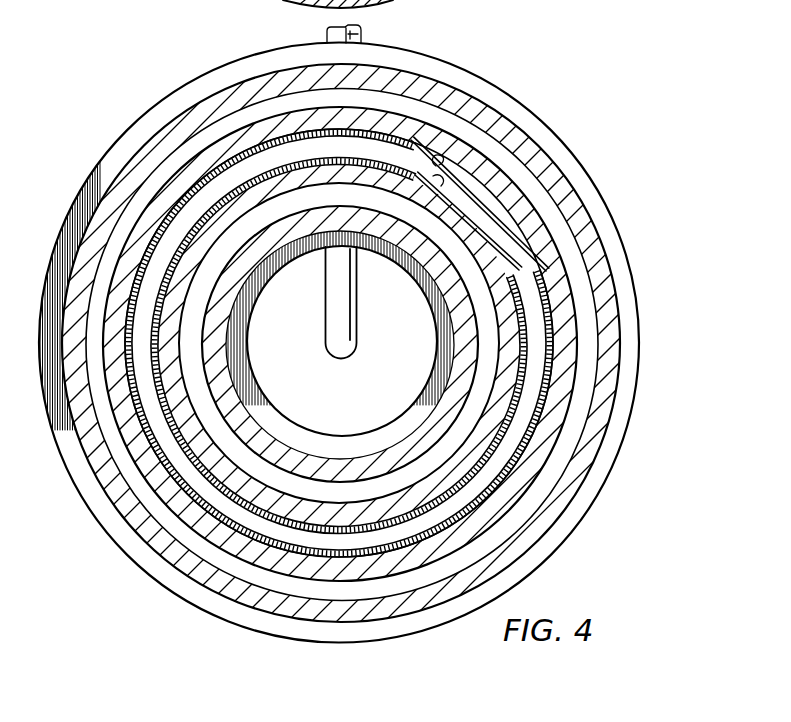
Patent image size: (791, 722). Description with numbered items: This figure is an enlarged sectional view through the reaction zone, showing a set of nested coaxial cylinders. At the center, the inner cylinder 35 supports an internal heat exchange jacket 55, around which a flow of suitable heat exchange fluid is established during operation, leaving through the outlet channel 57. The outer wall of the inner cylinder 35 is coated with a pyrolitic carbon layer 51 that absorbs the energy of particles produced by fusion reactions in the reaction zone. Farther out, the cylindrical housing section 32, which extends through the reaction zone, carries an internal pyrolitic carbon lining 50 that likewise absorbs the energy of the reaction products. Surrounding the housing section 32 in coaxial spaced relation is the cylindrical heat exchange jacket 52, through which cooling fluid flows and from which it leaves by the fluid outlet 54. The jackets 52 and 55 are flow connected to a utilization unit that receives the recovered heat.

The cylindrical housing section 32 is at (412, 128).
The inner cylinder 35 is at (477, 237).
The pyrolitic carbon lining 50 is at (436, 164).
The pyrolitic carbon layer 51 is at (394, 236).
The heat exchange jacket 52 is at (561, 182).
The fluid outlet 54 is at (362, 33).
The heat exchange jacket 55 is at (432, 426).
The outlet channel 57 is at (337, 277).